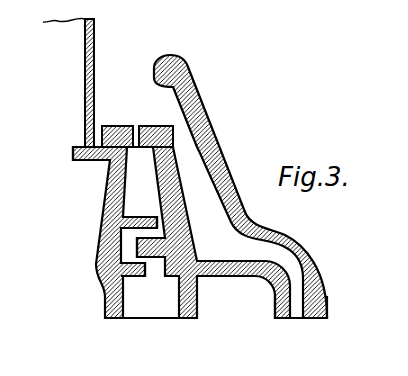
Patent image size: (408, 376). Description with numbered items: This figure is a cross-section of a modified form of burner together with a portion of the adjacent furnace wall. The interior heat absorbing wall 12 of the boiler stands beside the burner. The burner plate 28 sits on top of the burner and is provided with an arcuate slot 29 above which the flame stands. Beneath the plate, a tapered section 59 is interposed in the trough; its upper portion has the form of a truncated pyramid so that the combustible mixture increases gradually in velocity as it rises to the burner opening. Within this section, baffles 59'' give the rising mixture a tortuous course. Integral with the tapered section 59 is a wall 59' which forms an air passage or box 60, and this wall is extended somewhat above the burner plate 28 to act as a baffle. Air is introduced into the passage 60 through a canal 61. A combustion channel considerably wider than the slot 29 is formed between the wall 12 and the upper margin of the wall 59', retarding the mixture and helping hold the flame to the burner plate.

The heat absorbing wall 12 is at (85, 65).
The burner plate 28 is at (157, 126).
The arcuate slot 29 is at (110, 168).
The tapered section 59 is at (175, 232).
The wall 59' is at (240, 186).
The baffles 59'' is at (104, 246).
The air passage 60 is at (207, 212).
The canal 61 is at (309, 307).